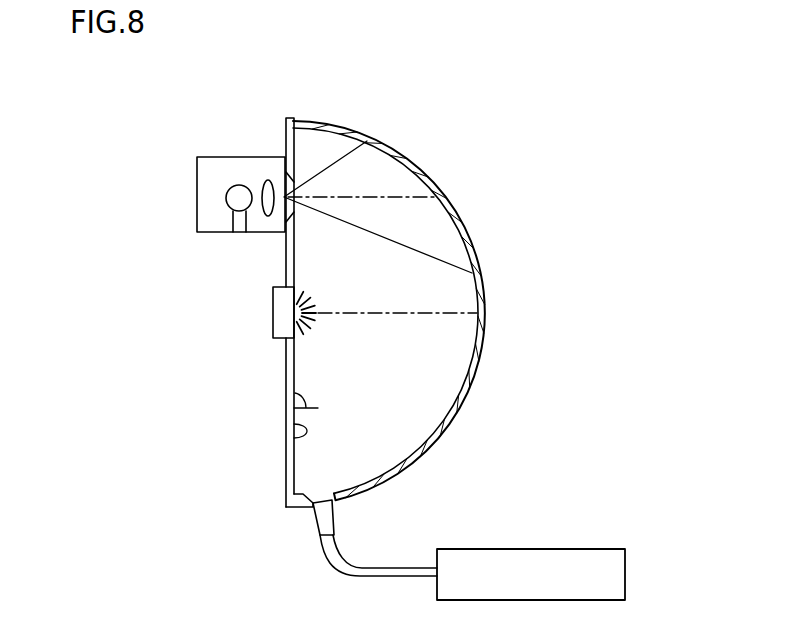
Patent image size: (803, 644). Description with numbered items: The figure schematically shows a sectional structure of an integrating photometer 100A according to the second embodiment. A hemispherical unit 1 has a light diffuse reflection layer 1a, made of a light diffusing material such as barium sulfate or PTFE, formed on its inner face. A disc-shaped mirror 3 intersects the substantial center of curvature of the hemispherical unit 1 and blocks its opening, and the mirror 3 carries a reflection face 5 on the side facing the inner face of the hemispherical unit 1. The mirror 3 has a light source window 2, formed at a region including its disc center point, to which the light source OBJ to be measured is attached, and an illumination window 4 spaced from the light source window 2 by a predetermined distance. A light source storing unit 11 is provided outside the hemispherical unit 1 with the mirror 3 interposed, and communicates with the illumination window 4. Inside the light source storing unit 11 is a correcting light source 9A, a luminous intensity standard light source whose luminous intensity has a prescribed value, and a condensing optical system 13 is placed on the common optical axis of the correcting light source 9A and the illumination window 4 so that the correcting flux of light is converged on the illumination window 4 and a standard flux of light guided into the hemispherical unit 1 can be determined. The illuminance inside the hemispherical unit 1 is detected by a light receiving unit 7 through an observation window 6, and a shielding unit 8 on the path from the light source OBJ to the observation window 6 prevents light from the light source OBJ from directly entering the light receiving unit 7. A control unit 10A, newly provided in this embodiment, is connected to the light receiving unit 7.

The integrating photometer 100A is at (588, 79).
The hemispherical unit 1 is at (487, 302).
The light diffuse reflection layer 1a is at (469, 238).
The light source window 2 is at (327, 281).
The mirror 3 is at (285, 357).
The illumination window 4 is at (306, 170).
The reflection face 5 is at (295, 436).
The observation window 6 is at (323, 496).
The light receiving unit 7 is at (335, 517).
The shielding unit 8 is at (296, 393).
The correcting light source 9A is at (235, 188).
The control unit 10A is at (550, 557).
The light source storing unit 11 is at (207, 156).
The condensing optical system 13 is at (264, 181).
The light source OBJ is at (283, 313).